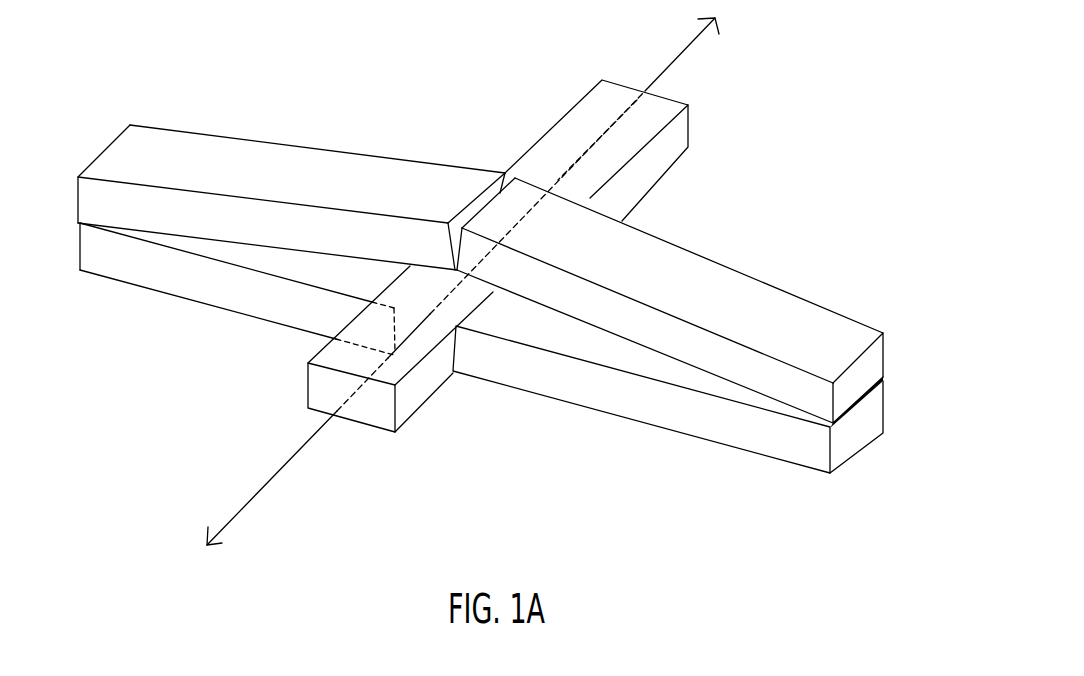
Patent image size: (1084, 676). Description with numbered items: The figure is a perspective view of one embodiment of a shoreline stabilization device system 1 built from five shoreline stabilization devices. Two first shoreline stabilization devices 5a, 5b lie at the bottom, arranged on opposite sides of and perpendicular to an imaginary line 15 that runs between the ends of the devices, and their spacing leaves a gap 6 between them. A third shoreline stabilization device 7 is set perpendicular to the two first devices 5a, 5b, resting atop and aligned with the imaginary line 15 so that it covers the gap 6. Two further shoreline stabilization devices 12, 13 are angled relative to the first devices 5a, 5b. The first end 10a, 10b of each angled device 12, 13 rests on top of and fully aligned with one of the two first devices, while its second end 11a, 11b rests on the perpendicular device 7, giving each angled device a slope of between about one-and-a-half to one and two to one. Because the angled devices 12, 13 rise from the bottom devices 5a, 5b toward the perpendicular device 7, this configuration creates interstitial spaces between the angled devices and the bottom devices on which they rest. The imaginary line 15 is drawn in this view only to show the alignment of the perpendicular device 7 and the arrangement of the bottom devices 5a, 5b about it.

The shoreline stabilization device system 1 is at (500, 281).
The first shoreline stabilization device 5a is at (243, 311).
The first shoreline stabilization device 5b is at (620, 407).
The gap 6 is at (436, 384).
The third shoreline stabilization device 7 is at (547, 154).
The first end 10a is at (867, 368).
The first end 10b is at (107, 149).
The second end 11a is at (500, 193).
The second end 11b is at (478, 207).
The angled shoreline stabilization device 12 is at (237, 164).
The angled shoreline stabilization device 13 is at (780, 301).
The imaginary line 15 is at (243, 500).